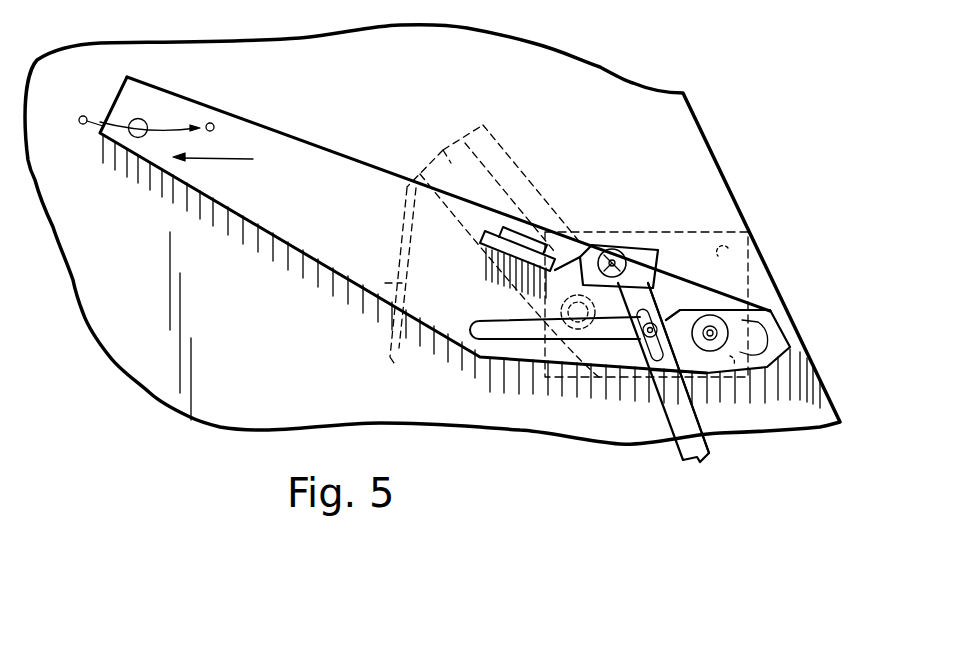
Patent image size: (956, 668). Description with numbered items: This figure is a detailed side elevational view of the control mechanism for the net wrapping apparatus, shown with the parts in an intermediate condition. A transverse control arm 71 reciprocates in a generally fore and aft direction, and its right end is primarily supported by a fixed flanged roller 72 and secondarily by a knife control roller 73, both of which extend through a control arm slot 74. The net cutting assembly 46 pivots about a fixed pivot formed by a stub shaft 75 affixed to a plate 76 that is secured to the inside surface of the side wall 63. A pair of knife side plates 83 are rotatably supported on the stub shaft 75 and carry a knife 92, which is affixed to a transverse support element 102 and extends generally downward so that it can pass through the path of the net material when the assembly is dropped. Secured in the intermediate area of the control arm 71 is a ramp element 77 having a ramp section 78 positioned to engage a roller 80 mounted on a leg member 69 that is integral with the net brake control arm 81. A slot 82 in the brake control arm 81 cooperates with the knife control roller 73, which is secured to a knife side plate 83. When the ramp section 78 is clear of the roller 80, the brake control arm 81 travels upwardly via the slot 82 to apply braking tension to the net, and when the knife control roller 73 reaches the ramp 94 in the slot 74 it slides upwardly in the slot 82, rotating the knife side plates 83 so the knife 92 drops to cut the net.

The net cutting assembly 46 is at (504, 192).
The side wall 63 is at (352, 84).
The leg member 69 is at (640, 245).
The transverse control arm 71 is at (316, 200).
The fixed flanged roller 72 is at (728, 327).
The knife control roller 73 is at (640, 336).
The control arm slot 74 is at (495, 334).
The stub shaft 75 is at (561, 308).
The plate 76 is at (690, 232).
The ramp element 77 is at (507, 253).
The ramp section 78 is at (567, 240).
The roller 80 is at (612, 249).
The net brake control arm 81 is at (690, 440).
The slot 82 is at (705, 412).
The knife side plate 83 is at (438, 168).
The knife 92 is at (368, 362).
The ramp 94 is at (690, 312).
The transverse support element 102 is at (403, 243).